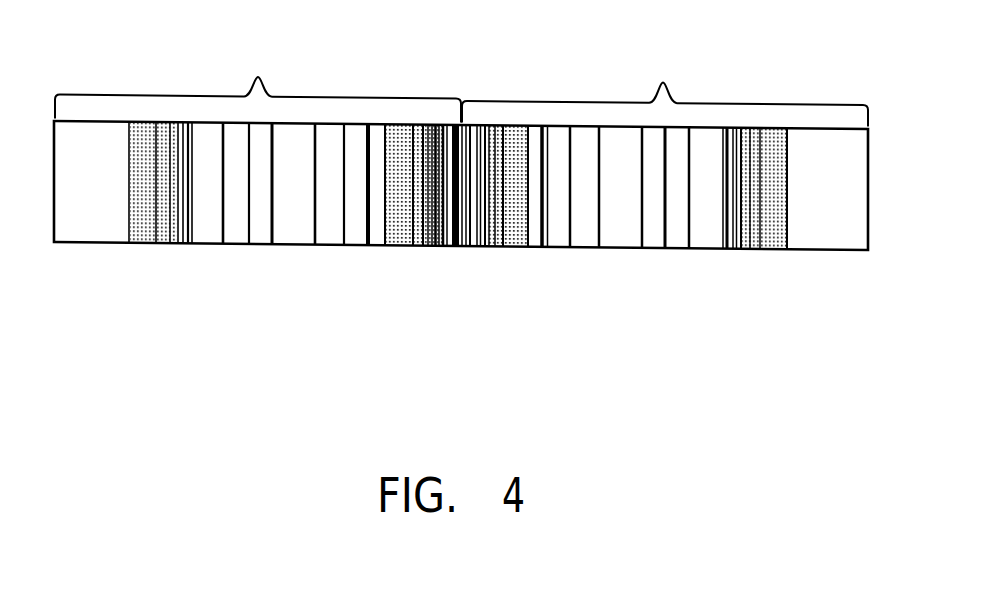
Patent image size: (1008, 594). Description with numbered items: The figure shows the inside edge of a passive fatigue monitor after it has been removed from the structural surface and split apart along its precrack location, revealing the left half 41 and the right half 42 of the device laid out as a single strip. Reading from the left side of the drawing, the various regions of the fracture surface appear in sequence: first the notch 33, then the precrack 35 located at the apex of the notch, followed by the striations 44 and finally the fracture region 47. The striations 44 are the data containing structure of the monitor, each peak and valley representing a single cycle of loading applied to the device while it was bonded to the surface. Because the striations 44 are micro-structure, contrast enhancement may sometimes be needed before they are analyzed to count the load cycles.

The notch 33 is at (87, 243).
The precrack 35 is at (158, 243).
The left half 41 is at (258, 82).
The right half 42 is at (665, 149).
The striations 44 is at (293, 245).
The fracture region 47 is at (403, 245).